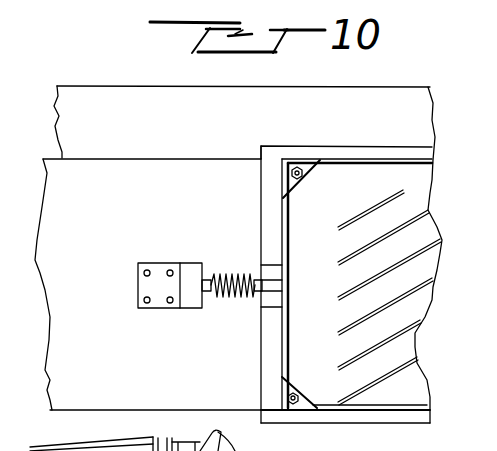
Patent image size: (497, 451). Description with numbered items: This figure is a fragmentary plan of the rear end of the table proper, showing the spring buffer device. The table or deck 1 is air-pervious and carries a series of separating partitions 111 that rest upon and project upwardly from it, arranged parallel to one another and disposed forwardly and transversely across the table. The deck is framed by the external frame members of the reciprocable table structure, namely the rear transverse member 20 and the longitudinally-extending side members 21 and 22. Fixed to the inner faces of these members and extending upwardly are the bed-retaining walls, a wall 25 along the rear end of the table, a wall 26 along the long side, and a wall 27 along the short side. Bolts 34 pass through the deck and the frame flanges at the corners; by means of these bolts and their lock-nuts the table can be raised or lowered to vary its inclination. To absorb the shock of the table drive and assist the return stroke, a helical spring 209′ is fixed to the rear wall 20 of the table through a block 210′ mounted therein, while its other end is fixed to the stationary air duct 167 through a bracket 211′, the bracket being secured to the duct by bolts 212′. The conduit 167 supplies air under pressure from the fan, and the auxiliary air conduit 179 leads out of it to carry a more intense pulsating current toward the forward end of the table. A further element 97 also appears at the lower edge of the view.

The auxiliary air conduit 179 is at (383, 72).
The side member 21 is at (358, 128).
The wall 26 is at (412, 160).
The bolt 34 is at (304, 176).
The wall 25 is at (285, 212).
The rear transverse member 20 is at (268, 230).
The helical spring 209′ is at (242, 255).
The bolts 212′ is at (146, 275).
The bracket 211′ is at (188, 304).
The block 210′ is at (267, 304).
The conduit 167 is at (60, 318).
The separating partitions 111 is at (413, 293).
The table or deck 1 is at (398, 346).
The side member 22 is at (378, 418).
The wall 27 is at (412, 408).
The track 97 is at (32, 448).